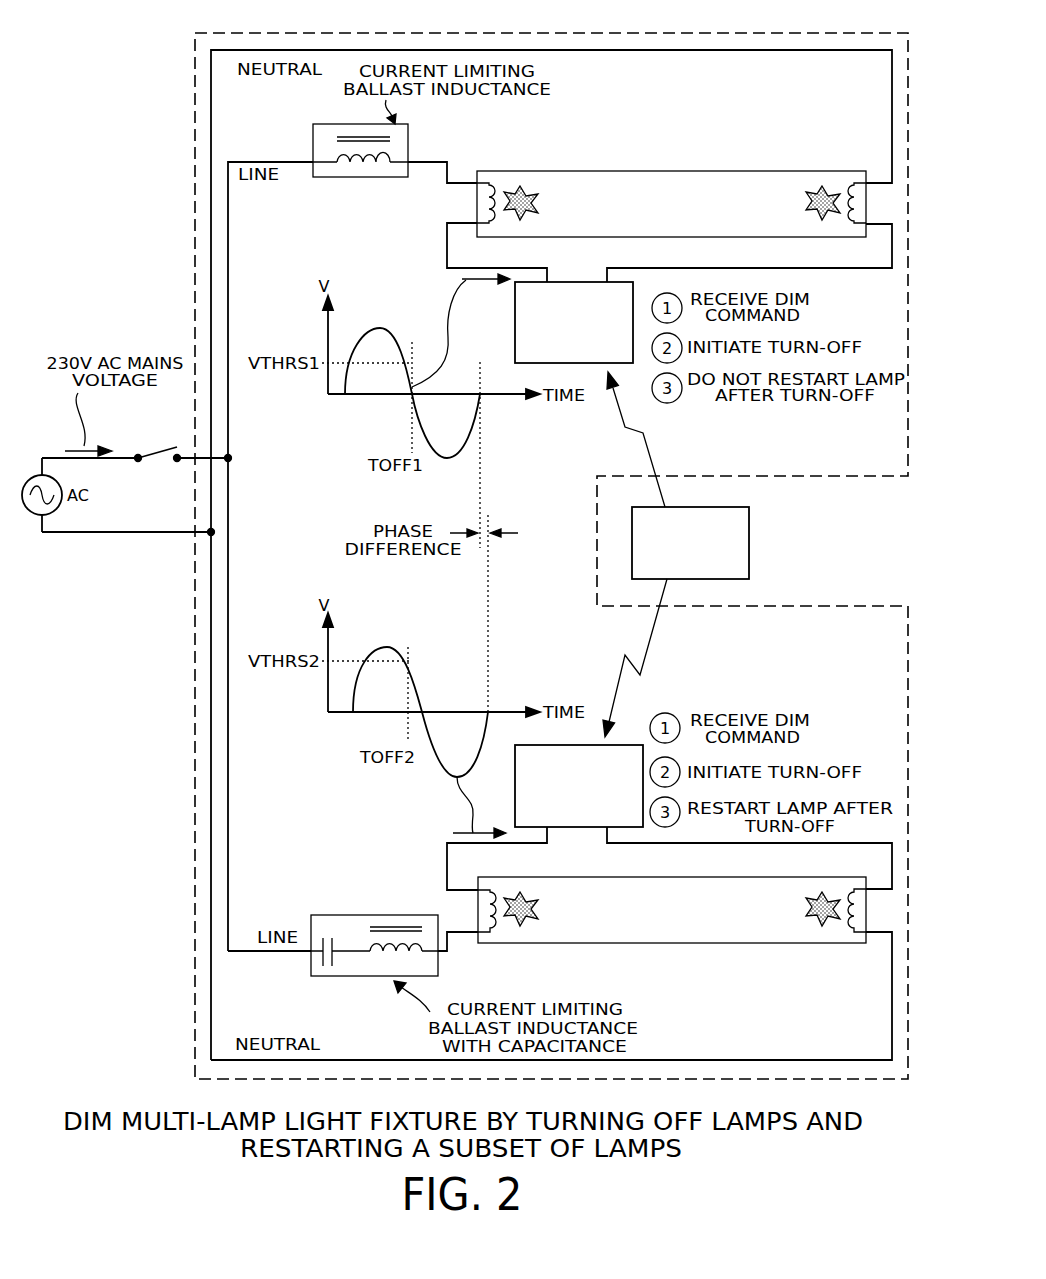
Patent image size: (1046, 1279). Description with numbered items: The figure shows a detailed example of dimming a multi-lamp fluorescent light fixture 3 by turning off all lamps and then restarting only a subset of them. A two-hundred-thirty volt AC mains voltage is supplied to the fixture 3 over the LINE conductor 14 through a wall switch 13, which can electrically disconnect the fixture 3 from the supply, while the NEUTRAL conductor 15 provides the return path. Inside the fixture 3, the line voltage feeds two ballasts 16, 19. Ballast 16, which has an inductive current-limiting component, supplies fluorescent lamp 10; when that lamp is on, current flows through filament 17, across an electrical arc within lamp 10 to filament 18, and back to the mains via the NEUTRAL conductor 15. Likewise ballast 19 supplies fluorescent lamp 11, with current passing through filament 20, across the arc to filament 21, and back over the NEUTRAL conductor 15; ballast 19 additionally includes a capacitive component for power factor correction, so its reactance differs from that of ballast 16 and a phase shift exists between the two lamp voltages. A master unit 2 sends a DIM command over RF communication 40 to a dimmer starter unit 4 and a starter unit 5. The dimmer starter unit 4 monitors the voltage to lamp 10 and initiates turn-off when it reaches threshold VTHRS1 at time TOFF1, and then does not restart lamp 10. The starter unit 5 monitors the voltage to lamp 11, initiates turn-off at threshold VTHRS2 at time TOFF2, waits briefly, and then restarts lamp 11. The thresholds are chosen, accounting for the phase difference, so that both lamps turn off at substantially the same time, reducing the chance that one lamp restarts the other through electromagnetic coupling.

The master unit 2 is at (690, 543).
The multi-lamp light fixture 3 is at (690, 33).
The dimmer starter unit 4 is at (568, 357).
The starter unit 5 is at (573, 815).
The fluorescent lamp 10 is at (669, 190).
The fluorescent lamp 11 is at (674, 896).
The wall switch 13 is at (170, 447).
The LINE conductor 14 is at (117, 460).
The NEUTRAL conductor 15 is at (105, 534).
The ballast 16 is at (323, 124).
The filament 17 is at (477, 202).
The filament 18 is at (866, 204).
The ballast 19 is at (323, 915).
The filament 20 is at (482, 908).
The filament 21 is at (866, 910).
The RF communication 40 is at (643, 462).